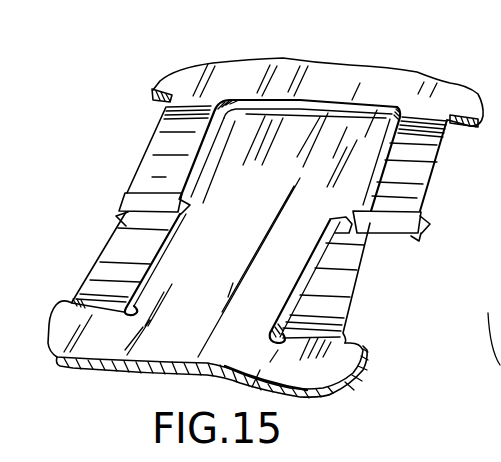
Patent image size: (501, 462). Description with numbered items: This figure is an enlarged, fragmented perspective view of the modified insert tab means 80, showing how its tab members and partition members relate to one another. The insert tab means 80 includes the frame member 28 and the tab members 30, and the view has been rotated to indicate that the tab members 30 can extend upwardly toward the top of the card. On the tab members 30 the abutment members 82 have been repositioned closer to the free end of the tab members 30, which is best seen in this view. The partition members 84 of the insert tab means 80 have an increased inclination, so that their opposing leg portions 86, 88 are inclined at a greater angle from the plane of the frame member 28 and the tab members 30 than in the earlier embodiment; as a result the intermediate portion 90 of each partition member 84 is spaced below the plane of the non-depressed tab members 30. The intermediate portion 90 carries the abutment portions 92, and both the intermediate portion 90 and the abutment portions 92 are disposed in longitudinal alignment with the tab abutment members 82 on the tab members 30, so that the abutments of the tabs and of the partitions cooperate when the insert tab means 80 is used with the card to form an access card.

The insert tab means 80 is at (305, 30).
The frame member 28 is at (328, 75).
The tab members 30 is at (333, 128).
The partition members 84 is at (164, 108).
The leg portion 86 is at (172, 140).
The leg portion 88 is at (123, 245).
The intermediate portion 90 is at (124, 209).
The abutment portions 92 is at (135, 193).
The abutment members 82 is at (190, 198).